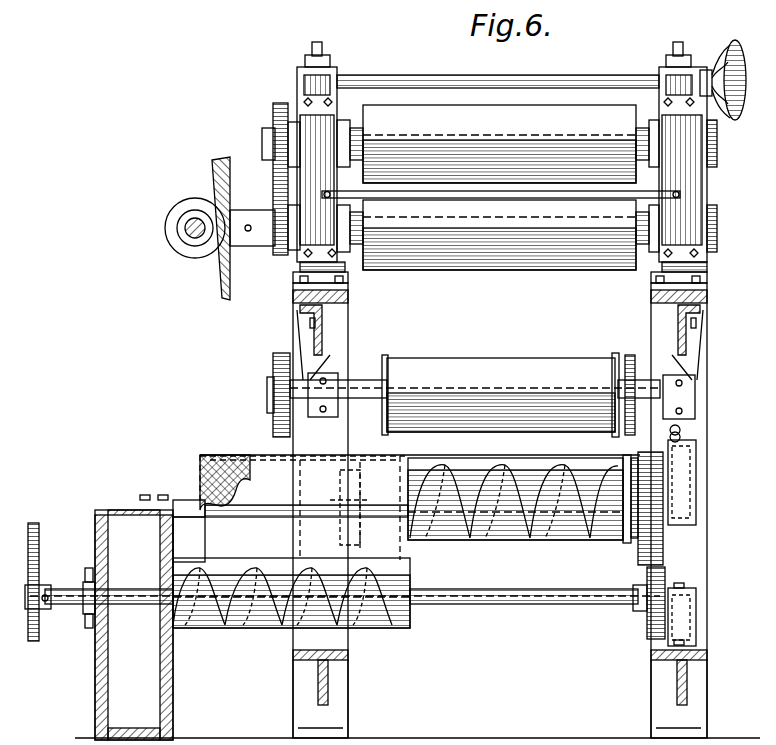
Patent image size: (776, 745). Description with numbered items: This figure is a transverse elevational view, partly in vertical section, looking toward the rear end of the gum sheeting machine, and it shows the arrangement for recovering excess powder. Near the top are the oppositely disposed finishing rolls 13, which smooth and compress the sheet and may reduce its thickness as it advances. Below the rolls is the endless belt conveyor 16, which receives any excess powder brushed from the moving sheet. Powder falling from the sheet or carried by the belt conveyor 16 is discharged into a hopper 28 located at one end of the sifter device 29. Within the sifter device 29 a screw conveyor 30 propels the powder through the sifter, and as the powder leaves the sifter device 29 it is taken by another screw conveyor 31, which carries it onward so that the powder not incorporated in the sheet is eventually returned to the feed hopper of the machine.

The finishing roll 13 is at (560, 228).
The endless belt conveyor 16 is at (528, 362).
The hopper 28 is at (485, 470).
The sifter device 29 is at (202, 458).
The screw conveyor 30 is at (587, 528).
The screw conveyor 31 is at (408, 630).